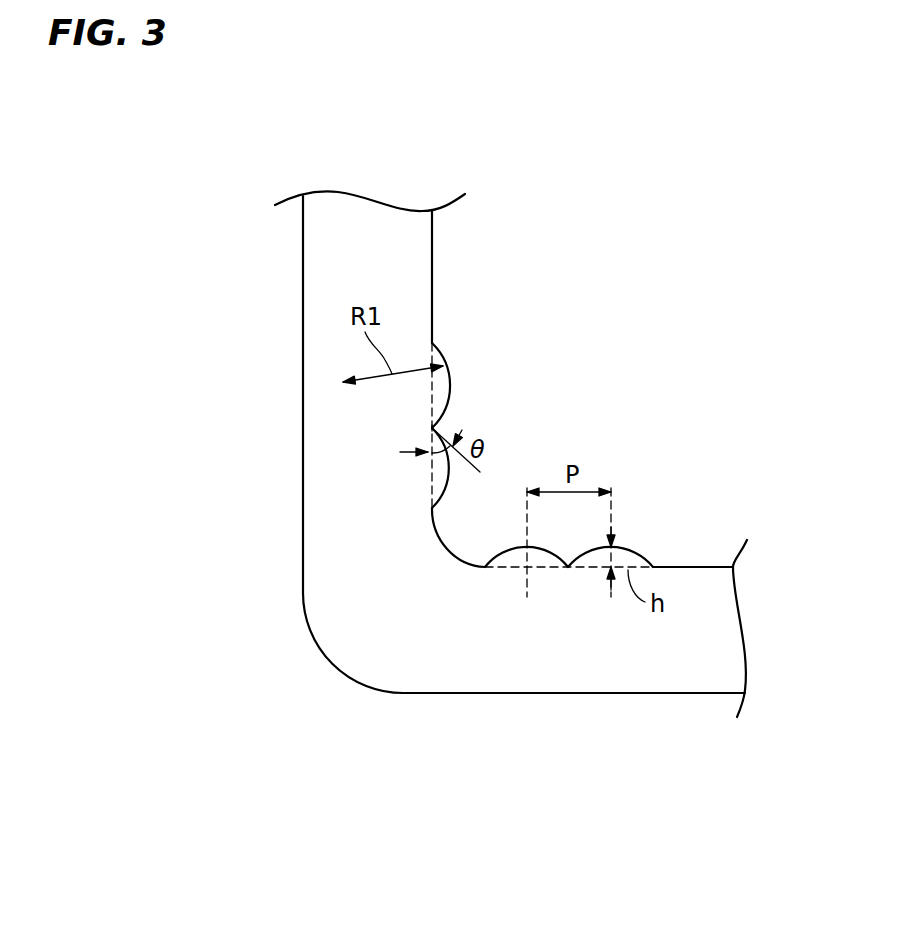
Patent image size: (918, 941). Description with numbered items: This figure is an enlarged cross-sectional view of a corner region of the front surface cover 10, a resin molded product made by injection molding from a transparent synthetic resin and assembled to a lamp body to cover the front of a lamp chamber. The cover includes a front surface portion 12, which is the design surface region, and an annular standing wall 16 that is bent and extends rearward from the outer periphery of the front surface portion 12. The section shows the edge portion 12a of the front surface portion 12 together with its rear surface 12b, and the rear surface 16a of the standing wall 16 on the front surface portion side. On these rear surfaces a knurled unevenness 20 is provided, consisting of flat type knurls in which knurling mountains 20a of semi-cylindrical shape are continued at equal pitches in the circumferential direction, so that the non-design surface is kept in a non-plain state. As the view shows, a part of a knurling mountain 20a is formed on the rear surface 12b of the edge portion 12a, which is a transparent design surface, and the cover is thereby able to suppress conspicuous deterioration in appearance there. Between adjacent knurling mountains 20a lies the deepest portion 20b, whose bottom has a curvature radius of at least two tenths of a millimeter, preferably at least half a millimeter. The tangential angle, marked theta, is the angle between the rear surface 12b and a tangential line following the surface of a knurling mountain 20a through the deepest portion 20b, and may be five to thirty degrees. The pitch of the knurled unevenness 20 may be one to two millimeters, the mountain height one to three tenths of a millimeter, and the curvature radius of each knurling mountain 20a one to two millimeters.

The front surface cover 10 is at (461, 542).
The front surface portion 12 is at (364, 392).
The edge portion 12a is at (303, 436).
The rear surface 12b is at (432, 330).
The standing wall 16 is at (525, 648).
The rear surface 16a is at (680, 567).
The knurled unevenness 20 is at (441, 545).
The knurling mountain 20a is at (437, 346).
The deepest portion 20b is at (432, 428).